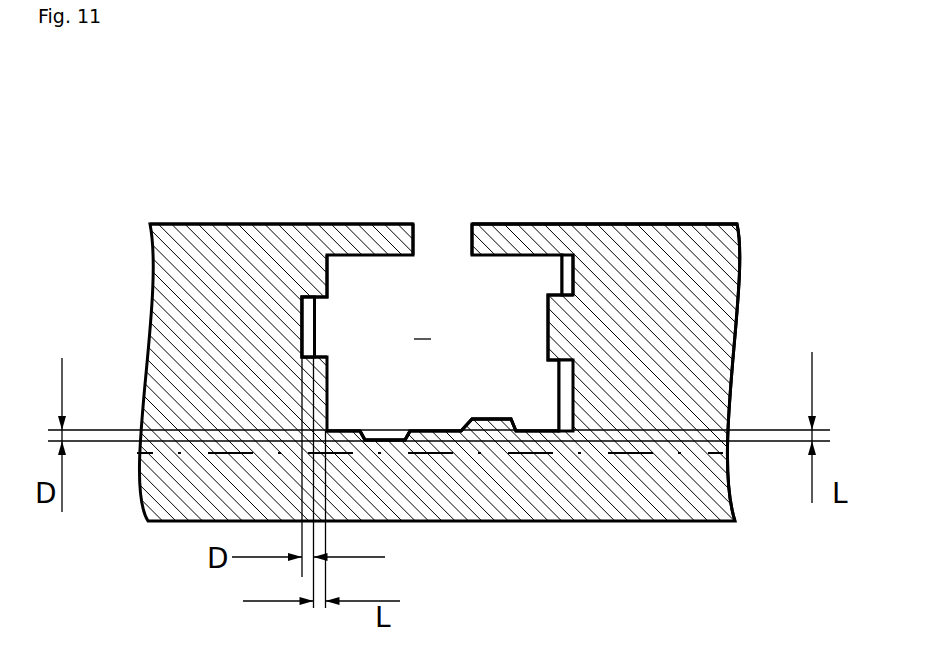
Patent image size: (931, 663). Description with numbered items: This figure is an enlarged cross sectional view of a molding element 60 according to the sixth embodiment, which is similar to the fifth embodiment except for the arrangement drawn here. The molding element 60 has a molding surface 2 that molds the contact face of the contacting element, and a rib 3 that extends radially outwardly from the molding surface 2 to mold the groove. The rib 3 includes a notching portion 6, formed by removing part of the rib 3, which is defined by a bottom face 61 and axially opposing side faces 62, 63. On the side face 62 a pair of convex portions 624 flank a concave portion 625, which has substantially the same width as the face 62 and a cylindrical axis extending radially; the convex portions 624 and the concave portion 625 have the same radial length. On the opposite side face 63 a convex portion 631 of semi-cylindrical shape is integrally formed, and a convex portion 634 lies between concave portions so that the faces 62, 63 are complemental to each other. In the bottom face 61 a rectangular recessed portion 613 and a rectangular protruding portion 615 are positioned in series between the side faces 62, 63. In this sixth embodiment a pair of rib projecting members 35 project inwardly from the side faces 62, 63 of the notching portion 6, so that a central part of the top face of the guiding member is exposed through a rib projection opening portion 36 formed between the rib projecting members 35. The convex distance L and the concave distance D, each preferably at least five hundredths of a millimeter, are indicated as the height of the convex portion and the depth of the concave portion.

The molding surface 2 is at (706, 452).
The rib 3 is at (660, 240).
The notching portion 6 is at (422, 327).
The rib projecting member 35 is at (370, 223).
The rib projection opening portion 36 is at (443, 243).
The molding element 60 is at (165, 194).
The bottom face 61 is at (428, 430).
The axially opposing side face 62 is at (318, 313).
The axially opposing side face 63 is at (567, 277).
The rectangular recessed portion 613 is at (385, 438).
The rectangular protruding portion 615 is at (478, 418).
The convex portion 624 is at (323, 272).
The concave portion 625 is at (318, 330).
The convex portion 631 is at (548, 330).
The convex portion 634 is at (572, 400).